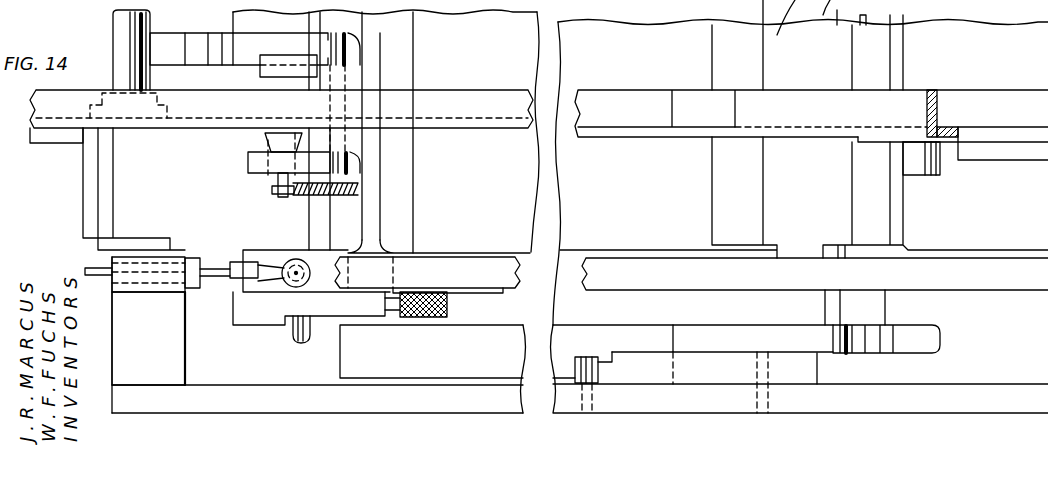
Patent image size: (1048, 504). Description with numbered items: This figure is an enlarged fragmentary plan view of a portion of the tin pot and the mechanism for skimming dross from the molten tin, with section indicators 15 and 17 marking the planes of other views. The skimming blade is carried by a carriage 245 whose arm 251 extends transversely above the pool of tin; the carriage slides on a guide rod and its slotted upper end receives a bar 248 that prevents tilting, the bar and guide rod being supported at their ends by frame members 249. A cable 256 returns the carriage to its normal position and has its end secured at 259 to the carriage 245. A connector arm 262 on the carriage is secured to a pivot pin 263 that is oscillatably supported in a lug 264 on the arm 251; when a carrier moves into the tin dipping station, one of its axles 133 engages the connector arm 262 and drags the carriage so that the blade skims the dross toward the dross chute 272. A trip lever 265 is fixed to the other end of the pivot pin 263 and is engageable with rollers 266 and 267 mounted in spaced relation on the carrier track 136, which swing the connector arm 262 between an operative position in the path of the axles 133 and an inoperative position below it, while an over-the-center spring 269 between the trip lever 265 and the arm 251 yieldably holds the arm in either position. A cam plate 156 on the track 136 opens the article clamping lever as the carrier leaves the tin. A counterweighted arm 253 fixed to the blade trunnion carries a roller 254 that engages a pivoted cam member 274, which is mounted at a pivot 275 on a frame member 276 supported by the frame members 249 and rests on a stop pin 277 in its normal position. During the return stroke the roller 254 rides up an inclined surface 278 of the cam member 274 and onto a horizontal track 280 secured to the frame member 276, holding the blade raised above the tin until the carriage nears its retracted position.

The axle 133 is at (128, 36).
The connector arm 262 is at (168, 44).
The pivot pin 263 is at (328, 43).
The arm 251 is at (398, 63).
The lug 264 is at (352, 85).
The inner track 136 is at (540, 89).
The cam plate 156 is at (937, 108).
The roller 267 is at (940, 172).
The trip lever 265 is at (248, 163).
The roller 266 is at (272, 182).
The over-the-center spring 269 is at (322, 197).
The cable attachment point 259 is at (300, 259).
The bar 248 is at (497, 273).
The cable 256 is at (213, 277).
The frame member 249 is at (177, 357).
The counterweighted arm 253 is at (338, 305).
The roller 254 is at (295, 342).
The carriage 245 is at (478, 296).
The horizontal track 280 is at (425, 363).
The frame member 276 is at (320, 395).
The cam member 274 is at (722, 362).
The inclined surface 278 is at (907, 340).
The pivot 275 is at (590, 350).
The stop pin 277 is at (768, 398).
The dross chute 272 is at (976, 250).
The section line 17 is at (190, 210).
The section line 15 is at (95, 405).